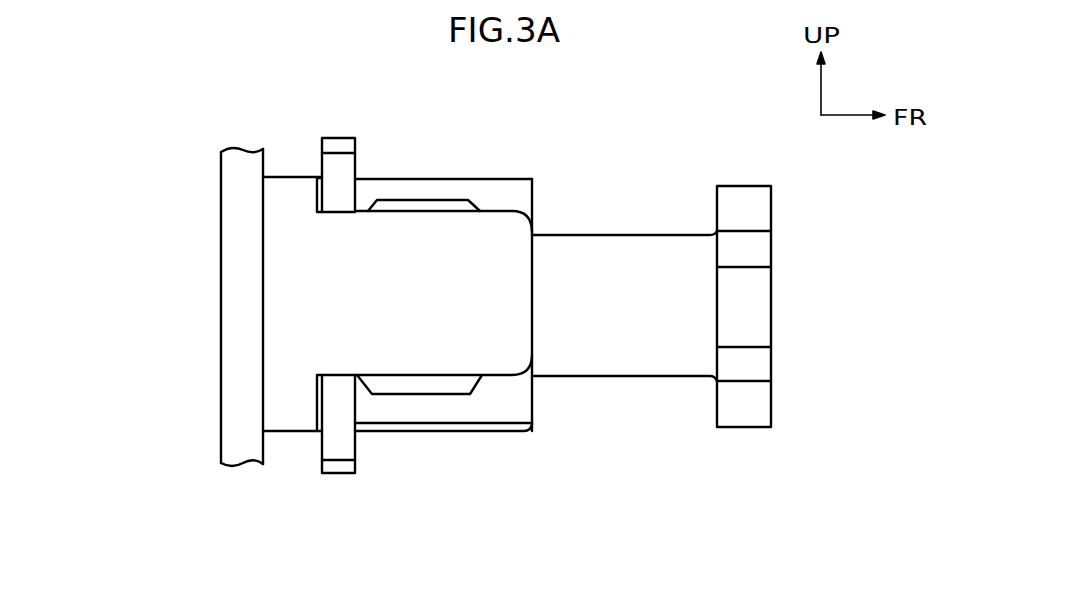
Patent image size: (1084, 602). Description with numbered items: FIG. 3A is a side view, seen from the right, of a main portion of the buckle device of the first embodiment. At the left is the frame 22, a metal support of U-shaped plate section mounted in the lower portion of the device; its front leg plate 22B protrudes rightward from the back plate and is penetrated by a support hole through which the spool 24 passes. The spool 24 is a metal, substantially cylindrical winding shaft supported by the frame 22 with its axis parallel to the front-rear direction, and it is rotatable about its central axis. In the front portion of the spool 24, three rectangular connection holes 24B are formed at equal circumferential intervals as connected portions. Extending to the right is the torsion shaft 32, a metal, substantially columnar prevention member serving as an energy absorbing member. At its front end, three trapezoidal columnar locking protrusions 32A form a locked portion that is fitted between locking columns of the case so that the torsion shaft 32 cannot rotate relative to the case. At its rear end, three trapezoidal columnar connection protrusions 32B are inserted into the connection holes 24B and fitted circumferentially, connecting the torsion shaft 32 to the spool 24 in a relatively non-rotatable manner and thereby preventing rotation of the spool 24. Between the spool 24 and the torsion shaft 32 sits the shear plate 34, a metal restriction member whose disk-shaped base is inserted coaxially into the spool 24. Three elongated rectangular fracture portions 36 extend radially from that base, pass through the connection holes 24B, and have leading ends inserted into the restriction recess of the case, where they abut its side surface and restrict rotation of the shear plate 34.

The frame 22 is at (170, 307).
The leg plate 22B is at (236, 187).
The spool 24 is at (290, 177).
The connection hole 24B is at (400, 190).
The torsion shaft 32 is at (612, 233).
The locking protrusion 32A is at (746, 185).
The connection protrusion 32B is at (452, 206).
The shear plate 34 is at (322, 128).
The fracture portion 36 is at (343, 138).